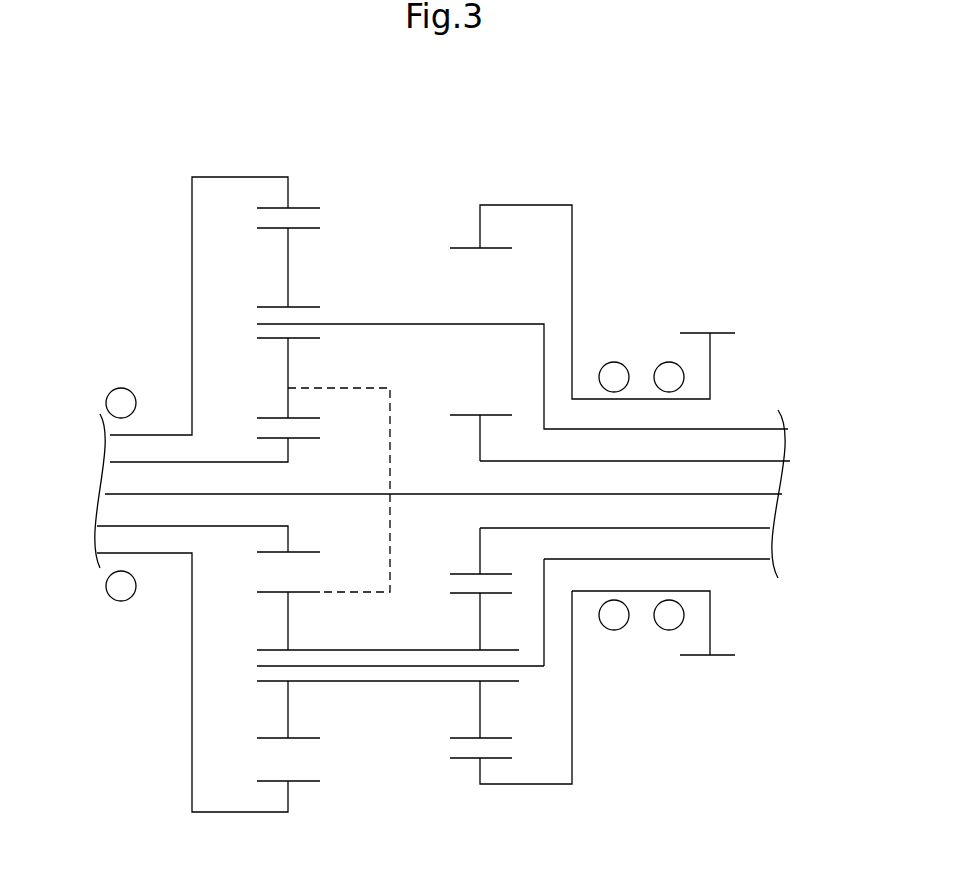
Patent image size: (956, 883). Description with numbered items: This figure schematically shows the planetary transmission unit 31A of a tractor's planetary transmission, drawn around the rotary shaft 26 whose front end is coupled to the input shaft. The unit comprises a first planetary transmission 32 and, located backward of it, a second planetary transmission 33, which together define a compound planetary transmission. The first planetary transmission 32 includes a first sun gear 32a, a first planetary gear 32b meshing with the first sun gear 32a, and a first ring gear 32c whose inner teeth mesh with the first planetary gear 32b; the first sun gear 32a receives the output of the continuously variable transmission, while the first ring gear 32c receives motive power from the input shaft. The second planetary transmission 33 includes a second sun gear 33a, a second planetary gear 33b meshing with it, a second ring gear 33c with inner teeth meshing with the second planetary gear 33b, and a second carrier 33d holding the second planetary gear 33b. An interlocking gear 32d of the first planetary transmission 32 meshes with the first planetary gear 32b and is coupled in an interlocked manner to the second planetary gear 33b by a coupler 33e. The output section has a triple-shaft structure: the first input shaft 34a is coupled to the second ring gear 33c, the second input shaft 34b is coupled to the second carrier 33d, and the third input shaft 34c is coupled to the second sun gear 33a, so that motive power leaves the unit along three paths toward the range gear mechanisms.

The rotary shaft 26 is at (727, 494).
The planetary transmission unit 31A is at (430, 128).
The first planetary transmission 32 is at (128, 156).
The first sun gear 32a is at (290, 448).
The first planetary gear 32b is at (290, 358).
The first ring gear 32c is at (290, 192).
The interlocking gear 32d is at (290, 708).
The second planetary transmission 33 is at (587, 168).
The second sun gear 33a is at (478, 563).
The second planetary gear 33b is at (478, 630).
The second ring gear 33c is at (480, 770).
The second carrier 33d is at (417, 322).
The coupler 33e is at (397, 683).
The first input shaft 34a is at (638, 400).
The second input shaft 34b is at (737, 560).
The third input shaft 34c is at (770, 460).